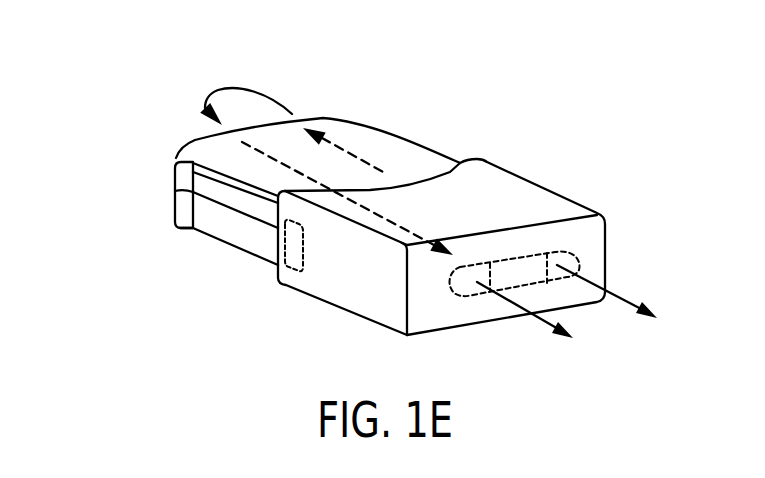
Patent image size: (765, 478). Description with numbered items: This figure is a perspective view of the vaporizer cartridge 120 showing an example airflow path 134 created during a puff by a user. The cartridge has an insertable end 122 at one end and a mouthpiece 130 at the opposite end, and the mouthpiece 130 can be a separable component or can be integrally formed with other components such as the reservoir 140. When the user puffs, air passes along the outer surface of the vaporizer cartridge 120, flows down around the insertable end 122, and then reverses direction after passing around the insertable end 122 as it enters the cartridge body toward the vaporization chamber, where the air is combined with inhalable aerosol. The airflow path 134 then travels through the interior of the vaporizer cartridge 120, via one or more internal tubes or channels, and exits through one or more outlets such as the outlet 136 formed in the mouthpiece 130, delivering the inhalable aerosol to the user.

The vaporizer cartridge 120 is at (448, 112).
The insertable end 122 is at (158, 200).
The mouthpiece 130 is at (542, 207).
The airflow path 134 is at (393, 217).
The outlet 136 is at (463, 290).
The reservoir 140 is at (260, 218).